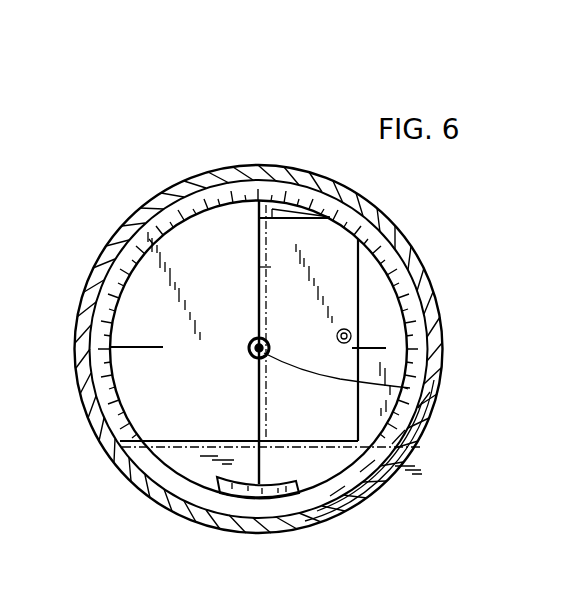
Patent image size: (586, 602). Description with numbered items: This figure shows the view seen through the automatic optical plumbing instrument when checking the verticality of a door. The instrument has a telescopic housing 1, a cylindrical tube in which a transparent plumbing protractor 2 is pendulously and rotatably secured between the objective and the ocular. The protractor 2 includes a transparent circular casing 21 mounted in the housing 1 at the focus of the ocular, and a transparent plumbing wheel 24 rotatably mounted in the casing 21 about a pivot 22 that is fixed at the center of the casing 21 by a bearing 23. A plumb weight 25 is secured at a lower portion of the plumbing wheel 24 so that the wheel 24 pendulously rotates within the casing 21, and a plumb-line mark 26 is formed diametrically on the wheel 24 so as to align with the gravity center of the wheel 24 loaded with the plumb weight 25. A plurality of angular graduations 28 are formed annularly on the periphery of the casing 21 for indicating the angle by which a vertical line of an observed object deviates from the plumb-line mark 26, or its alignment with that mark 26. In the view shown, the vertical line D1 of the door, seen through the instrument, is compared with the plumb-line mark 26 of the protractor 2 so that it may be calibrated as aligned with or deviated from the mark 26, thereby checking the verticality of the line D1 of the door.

The telescopic housing 1 is at (87, 283).
The transparent plumbing protractor 2 is at (130, 323).
The transparent circular casing 21 is at (437, 353).
The pivot 22 is at (413, 396).
The bearing 23 is at (270, 343).
The transparent plumbing wheel 24 is at (183, 463).
The plumb weight 25 is at (295, 497).
The plumb-line mark 26 is at (262, 266).
The angular graduations 28 is at (219, 190).
The vertical line of the door D1 is at (235, 378).